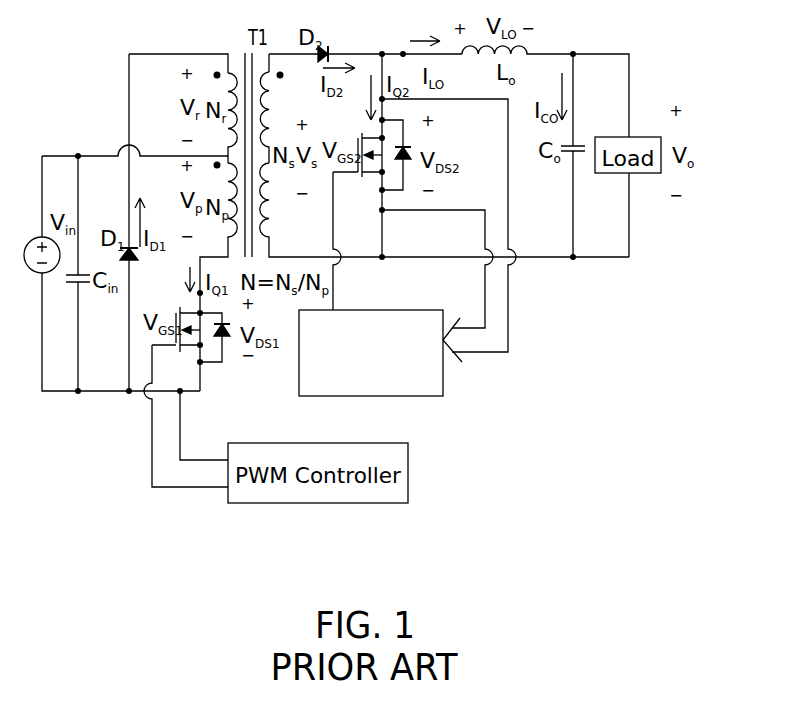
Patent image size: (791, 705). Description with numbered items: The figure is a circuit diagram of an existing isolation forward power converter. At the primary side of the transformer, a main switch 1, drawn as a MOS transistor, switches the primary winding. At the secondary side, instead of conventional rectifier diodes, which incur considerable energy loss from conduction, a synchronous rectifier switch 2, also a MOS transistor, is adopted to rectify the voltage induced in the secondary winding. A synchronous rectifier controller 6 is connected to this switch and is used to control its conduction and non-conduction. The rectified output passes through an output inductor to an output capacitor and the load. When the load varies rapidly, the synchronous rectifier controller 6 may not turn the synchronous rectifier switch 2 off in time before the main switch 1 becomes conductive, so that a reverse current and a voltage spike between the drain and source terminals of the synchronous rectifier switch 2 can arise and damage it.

The synchronous rectifier controller 6 is at (417, 310).
The primary switch Q1 1 is at (191, 345).
The synchronous rectifier switch Q2 2 is at (372, 164).